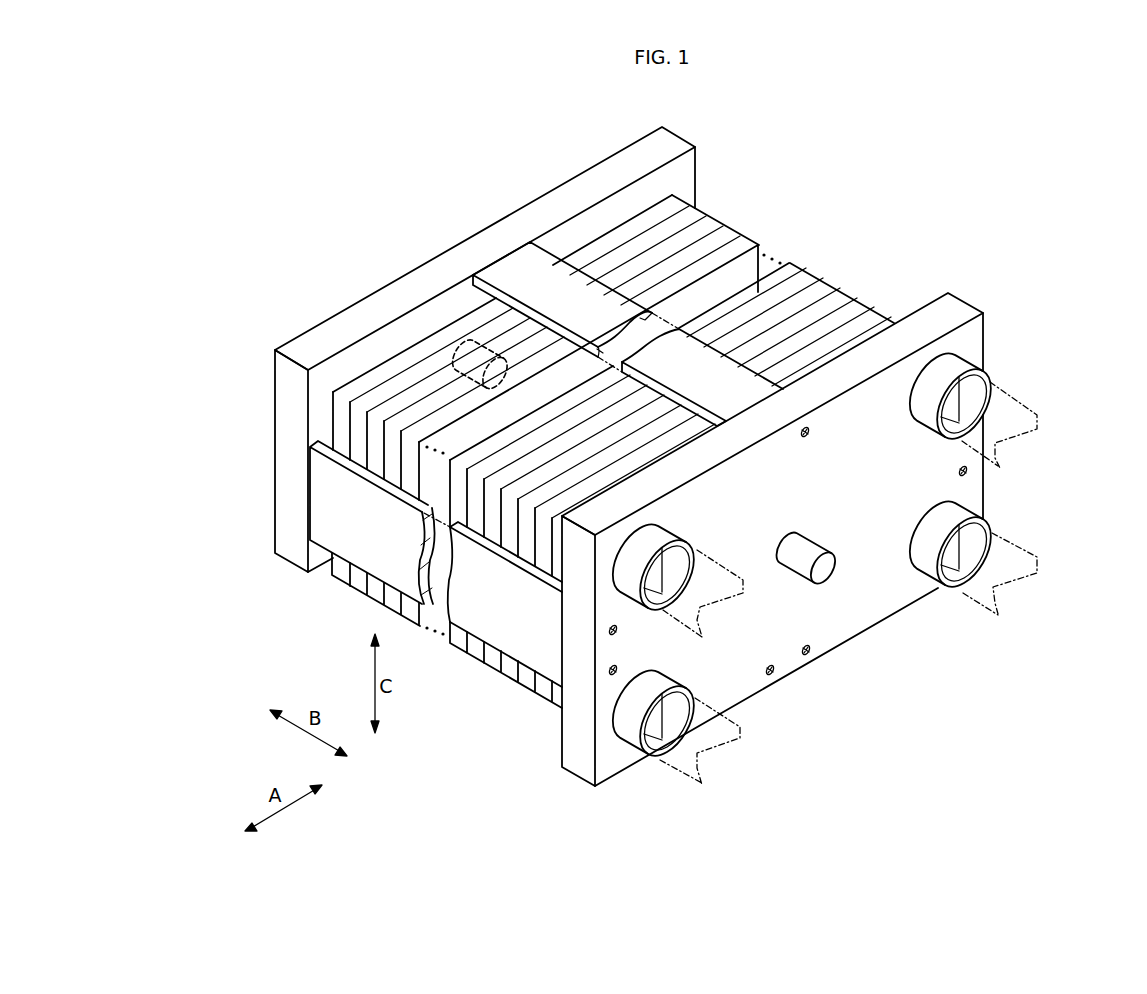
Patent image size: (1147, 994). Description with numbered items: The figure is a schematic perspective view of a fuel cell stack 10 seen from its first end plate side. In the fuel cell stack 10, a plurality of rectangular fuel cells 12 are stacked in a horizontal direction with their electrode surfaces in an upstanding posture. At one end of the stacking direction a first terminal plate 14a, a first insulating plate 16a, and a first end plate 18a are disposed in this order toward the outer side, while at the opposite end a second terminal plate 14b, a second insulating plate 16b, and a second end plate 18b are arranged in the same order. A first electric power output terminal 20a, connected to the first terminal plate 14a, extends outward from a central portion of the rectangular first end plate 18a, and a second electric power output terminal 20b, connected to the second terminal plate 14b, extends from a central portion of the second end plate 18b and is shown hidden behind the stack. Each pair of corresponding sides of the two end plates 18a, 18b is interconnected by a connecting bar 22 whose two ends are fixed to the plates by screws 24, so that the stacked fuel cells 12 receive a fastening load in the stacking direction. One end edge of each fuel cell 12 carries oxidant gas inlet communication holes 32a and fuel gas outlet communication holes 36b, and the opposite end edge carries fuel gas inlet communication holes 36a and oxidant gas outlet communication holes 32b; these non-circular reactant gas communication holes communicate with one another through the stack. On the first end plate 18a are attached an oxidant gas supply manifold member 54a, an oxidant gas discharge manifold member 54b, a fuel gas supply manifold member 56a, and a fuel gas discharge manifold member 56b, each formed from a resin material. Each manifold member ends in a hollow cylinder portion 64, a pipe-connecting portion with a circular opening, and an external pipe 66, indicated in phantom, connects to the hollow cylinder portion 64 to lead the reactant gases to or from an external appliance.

The fuel cell stack 10 is at (723, 106).
The fuel cells 12 is at (495, 523).
The first terminal plate 14a is at (545, 551).
The second terminal plate 14b is at (358, 428).
The first insulating plate 16a is at (558, 572).
The second insulating plate 16b is at (335, 412).
The first end plate 18a is at (948, 288).
The second end plate 18b is at (270, 372).
The first electric power output terminal 20a is at (828, 571).
The second electric power output terminal 20b is at (460, 352).
The connecting bar 22 is at (514, 270).
The screws 24 is at (807, 439).
The oxidant gas inlet communication holes 32a is at (666, 566).
The oxidant gas outlet communication holes 32b is at (953, 574).
The fuel gas inlet communication holes 36a is at (968, 403).
The fuel gas outlet communication holes 36b is at (659, 754).
The oxidant gas supply manifold member 54a is at (718, 550).
The oxidant gas discharge manifold member 54b is at (992, 589).
The fuel gas supply manifold member 56a is at (1034, 400).
The fuel gas discharge manifold member 56b is at (696, 764).
The hollow cylinder portion 64 is at (642, 540).
The external pipe 66 is at (1032, 430).